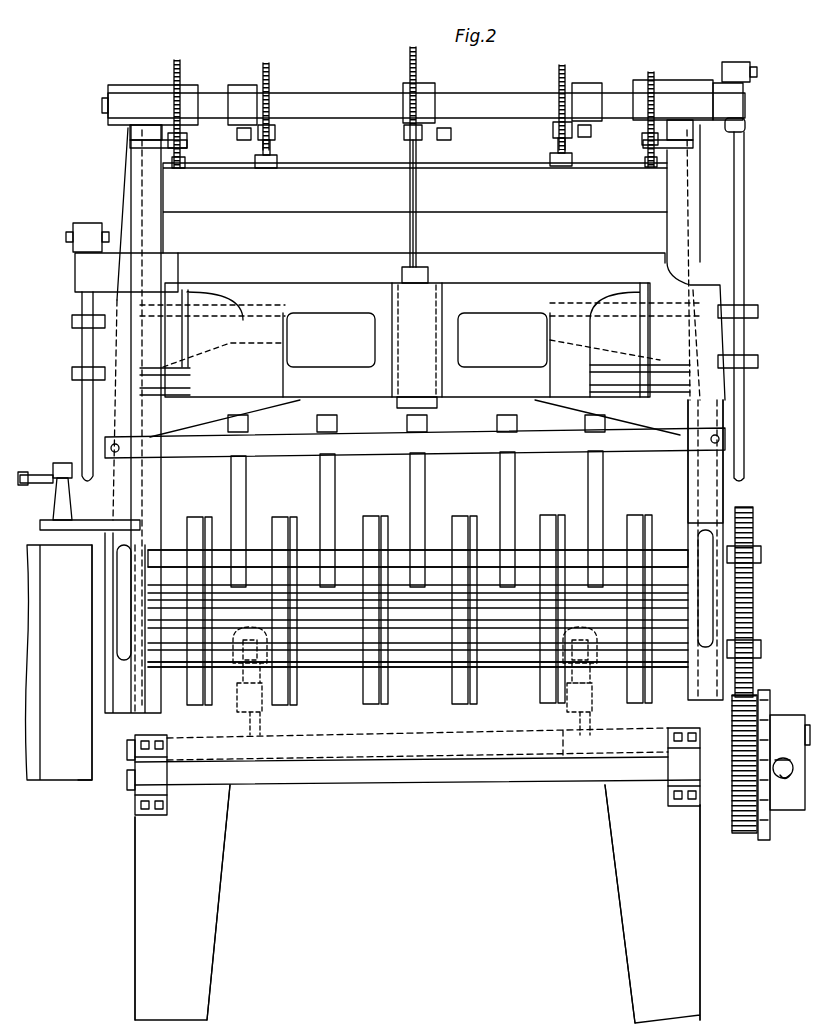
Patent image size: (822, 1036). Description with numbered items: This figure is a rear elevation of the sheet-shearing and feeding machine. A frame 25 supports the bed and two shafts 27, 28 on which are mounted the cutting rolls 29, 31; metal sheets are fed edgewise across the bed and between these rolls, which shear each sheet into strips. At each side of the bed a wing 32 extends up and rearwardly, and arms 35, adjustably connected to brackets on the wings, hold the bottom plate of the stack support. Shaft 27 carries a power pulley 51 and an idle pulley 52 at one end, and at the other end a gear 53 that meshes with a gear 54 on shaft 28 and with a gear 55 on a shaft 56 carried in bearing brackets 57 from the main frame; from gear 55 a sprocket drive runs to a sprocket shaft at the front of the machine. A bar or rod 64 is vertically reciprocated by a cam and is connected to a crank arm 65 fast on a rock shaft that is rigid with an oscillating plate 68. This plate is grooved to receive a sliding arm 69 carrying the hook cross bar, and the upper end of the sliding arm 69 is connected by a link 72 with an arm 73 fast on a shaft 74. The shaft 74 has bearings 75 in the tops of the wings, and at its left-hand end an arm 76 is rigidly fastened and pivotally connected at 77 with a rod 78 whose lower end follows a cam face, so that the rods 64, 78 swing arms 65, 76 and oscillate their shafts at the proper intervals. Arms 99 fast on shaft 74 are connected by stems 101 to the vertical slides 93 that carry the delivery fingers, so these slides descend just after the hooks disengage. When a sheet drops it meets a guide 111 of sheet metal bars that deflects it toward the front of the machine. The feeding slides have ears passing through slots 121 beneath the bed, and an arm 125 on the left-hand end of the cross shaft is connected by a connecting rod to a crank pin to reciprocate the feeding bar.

The frame 25 is at (218, 826).
The shaft 27 is at (340, 658).
The shaft 28 is at (348, 556).
The cutting roll 29 is at (203, 706).
The cutting roll 31 is at (282, 522).
The wing 32 is at (710, 488).
The arm 35 is at (287, 337).
The power pulley 51 is at (78, 772).
The idle pulley 52 is at (34, 778).
The gear 53 is at (752, 628).
The gear 54 is at (746, 542).
The gear 55 is at (748, 822).
The shaft 56 is at (496, 772).
The bearing bracket 57 is at (147, 780).
The rod 64 is at (82, 342).
The crank arm 65 is at (95, 224).
The oscillating plate 68 is at (507, 292).
The sliding arm 69 is at (400, 407).
The link 72 is at (411, 225).
The arm 73 is at (452, 128).
The shaft 74 is at (498, 100).
The bearing 75 is at (142, 100).
The arm 76 is at (739, 66).
The pivotal connection 77 is at (757, 74).
The rod 78 is at (740, 214).
The vertical slide 93 is at (278, 160).
The arm 99 is at (250, 140).
The stem 101 is at (268, 86).
The guide 111 is at (244, 472).
The slot 121 is at (778, 745).
The arm 125 is at (800, 790).